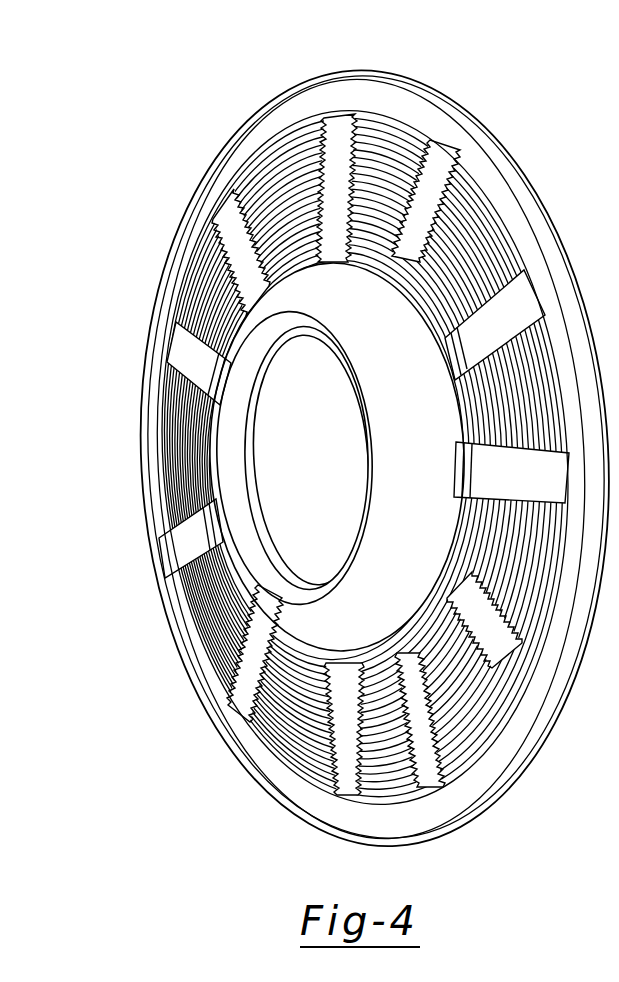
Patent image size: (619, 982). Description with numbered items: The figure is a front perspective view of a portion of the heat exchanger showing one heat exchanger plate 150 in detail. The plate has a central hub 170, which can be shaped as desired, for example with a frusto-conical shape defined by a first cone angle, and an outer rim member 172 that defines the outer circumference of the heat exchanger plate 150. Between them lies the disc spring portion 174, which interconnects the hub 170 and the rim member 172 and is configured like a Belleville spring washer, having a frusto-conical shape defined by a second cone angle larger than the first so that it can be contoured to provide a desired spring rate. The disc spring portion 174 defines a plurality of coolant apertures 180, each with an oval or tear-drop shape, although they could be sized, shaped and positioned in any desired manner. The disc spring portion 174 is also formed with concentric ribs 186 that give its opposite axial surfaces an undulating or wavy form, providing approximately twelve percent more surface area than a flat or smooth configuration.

The heat exchanger plate 150 is at (325, 458).
The hub 170 is at (380, 386).
The rim member 172 is at (278, 119).
The disc spring portion 174 is at (186, 465).
The coolant apertures 180 is at (250, 223).
The concentric ribs 186 is at (413, 723).